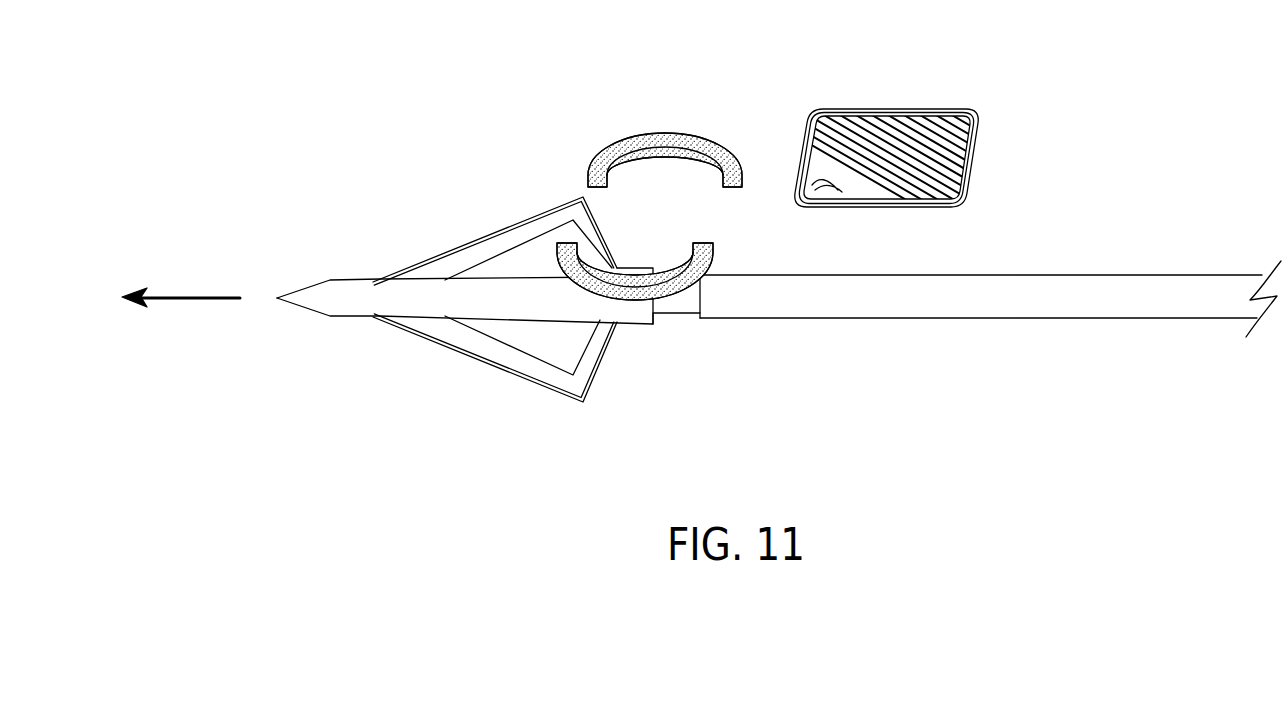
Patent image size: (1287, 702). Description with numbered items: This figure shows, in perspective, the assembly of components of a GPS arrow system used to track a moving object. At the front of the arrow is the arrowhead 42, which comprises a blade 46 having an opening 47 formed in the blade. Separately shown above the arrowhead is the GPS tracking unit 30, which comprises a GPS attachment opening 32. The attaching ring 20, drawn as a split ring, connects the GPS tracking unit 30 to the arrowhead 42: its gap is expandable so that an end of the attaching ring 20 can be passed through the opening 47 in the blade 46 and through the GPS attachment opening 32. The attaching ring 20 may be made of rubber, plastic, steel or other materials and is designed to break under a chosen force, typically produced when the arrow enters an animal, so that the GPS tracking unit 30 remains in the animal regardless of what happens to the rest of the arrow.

The attaching ring 20 is at (677, 133).
The GPS tracking unit 30 is at (927, 118).
The GPS attachment opening 32 is at (823, 168).
The arrowhead 42 is at (618, 360).
The blade 46 is at (503, 227).
The opening 47 is at (543, 250).